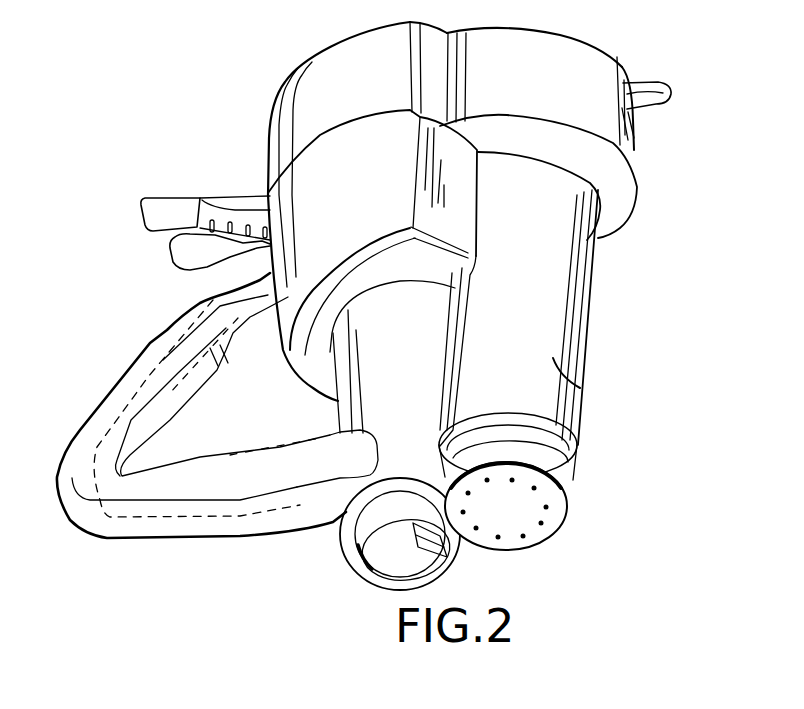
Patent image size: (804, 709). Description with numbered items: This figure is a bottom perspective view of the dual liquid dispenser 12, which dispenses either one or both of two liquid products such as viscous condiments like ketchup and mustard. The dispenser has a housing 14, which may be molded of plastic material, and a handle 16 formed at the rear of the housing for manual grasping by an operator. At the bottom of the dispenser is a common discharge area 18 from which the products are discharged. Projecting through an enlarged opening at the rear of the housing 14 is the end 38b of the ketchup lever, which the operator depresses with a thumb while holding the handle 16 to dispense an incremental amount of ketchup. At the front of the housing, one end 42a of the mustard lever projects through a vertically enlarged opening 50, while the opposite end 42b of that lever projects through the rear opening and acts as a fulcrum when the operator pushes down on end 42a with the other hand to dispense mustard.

The dual liquid dispenser 12 is at (628, 280).
The housing 14 is at (557, 338).
The handle 16 is at (183, 388).
The common discharge area 18 is at (525, 518).
The opposite end of ketchup lever 38b is at (158, 210).
The one end of mustard lever 42a is at (670, 96).
The opposite end of mustard lever 42b is at (187, 255).
The vertically enlarged opening 50 is at (618, 98).